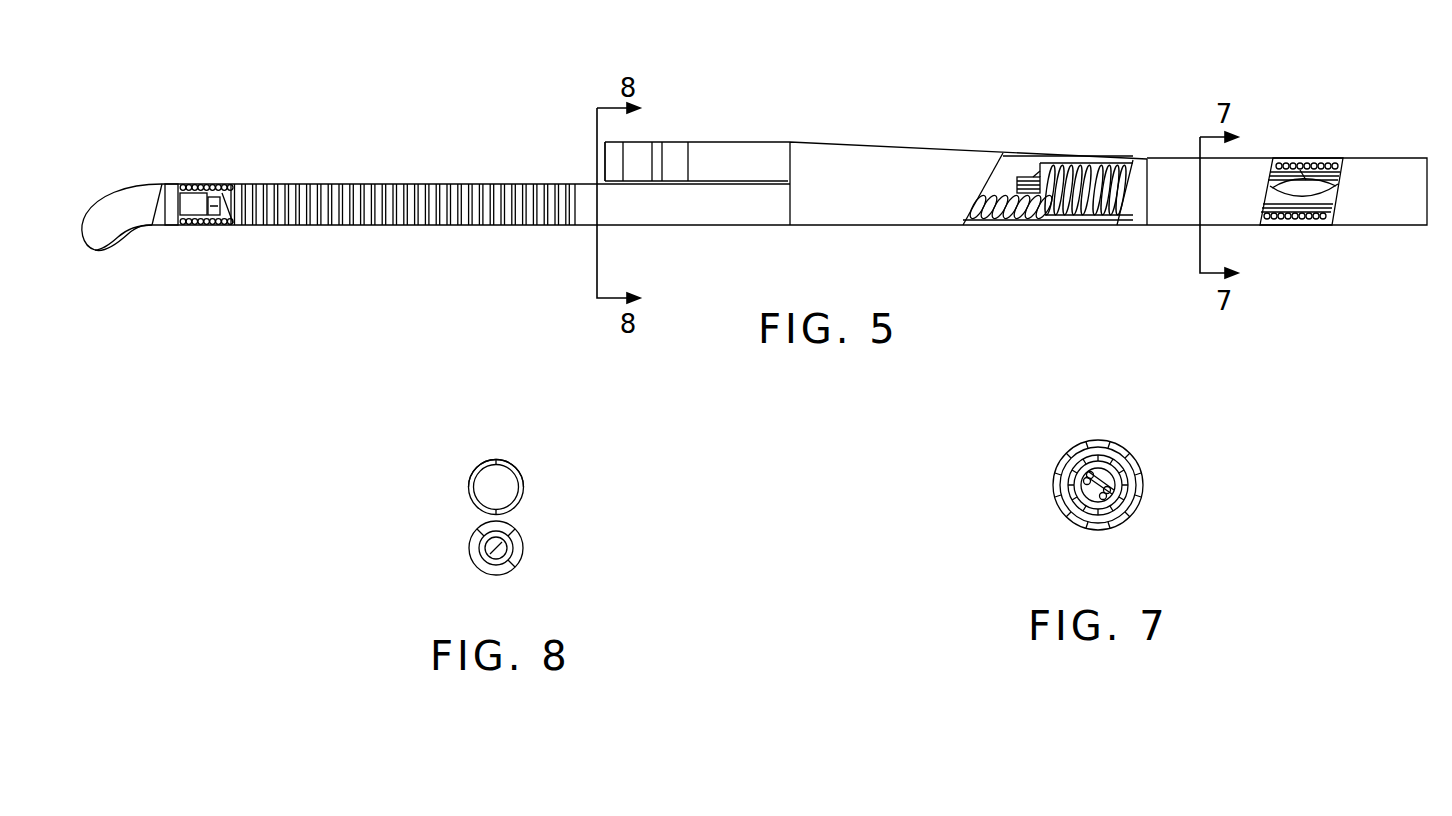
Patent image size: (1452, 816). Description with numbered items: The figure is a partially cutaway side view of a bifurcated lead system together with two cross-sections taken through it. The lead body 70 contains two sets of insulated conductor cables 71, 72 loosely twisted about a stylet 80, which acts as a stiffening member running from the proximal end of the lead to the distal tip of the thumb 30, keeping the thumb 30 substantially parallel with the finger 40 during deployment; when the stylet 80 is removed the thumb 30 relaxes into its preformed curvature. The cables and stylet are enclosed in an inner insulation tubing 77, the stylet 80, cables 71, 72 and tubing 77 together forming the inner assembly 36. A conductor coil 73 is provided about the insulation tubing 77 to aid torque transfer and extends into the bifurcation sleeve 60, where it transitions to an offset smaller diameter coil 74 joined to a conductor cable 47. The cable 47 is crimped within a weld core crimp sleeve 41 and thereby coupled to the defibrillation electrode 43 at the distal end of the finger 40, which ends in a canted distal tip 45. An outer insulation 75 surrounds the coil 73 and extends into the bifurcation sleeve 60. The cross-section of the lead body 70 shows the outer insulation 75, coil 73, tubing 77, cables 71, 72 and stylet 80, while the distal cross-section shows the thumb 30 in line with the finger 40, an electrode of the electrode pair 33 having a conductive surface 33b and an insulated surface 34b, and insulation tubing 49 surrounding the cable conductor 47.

In FIG. 5, the thumb 30 is at (721, 128).
In FIG. 8, the thumb 30 is at (542, 507).
In FIG. 5, the electrode pair 33 is at (623, 135).
In FIG. 8, the conductive surface 33b is at (468, 486).
In FIG. 8, the insulated surface 34b is at (525, 487).
In FIG. 5, the inner assembly 36 is at (773, 153).
In FIG. 5, the finger 40 is at (351, 238).
In FIG. 8, the finger 40 is at (540, 574).
In FIG. 5, the weld core crimp sleeve 41 is at (173, 217).
In FIG. 5, the defibrillation electrode 43 is at (277, 188).
In FIG. 5, the canted distal tip 45 is at (105, 233).
In FIG. 5, the conductor cable 47 is at (215, 206).
In FIG. 8, the conductor cable 47 is at (482, 546).
In FIG. 8, the insulation tubing 49 is at (516, 550).
In FIG. 5, the bifurcation sleeve 60 is at (815, 160).
In FIG. 5, the lead body 70 is at (1163, 137).
In FIG. 5, the insulated conductor cable set 71 is at (1020, 178).
In FIG. 5, the insulated conductor cable set 72 is at (1300, 170).
In FIG. 5, the conductor coil 73 is at (1062, 220).
In FIG. 7, the conductor coil 73 is at (1135, 508).
In FIG. 5, the offset smaller diameter coil 74 is at (1003, 220).
In FIG. 5, the outer insulation 75 is at (1312, 218).
In FIG. 7, the outer insulation 75 is at (1143, 478).
In FIG. 5, the insulation tubing 77 is at (1045, 175).
In FIG. 7, the insulation tubing 77 is at (1092, 510).
In FIG. 5, the stylet 80 is at (1033, 177).
In FIG. 7, the stylet 80 is at (1095, 488).